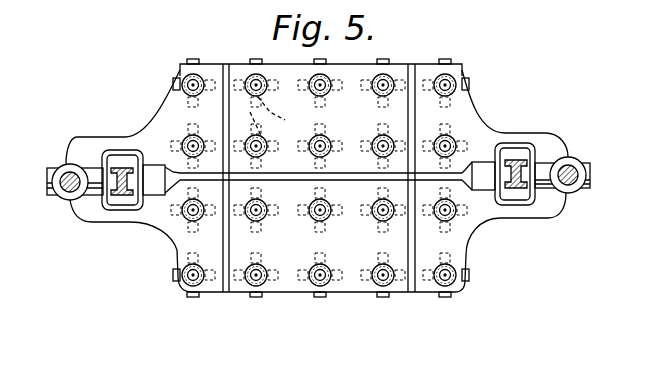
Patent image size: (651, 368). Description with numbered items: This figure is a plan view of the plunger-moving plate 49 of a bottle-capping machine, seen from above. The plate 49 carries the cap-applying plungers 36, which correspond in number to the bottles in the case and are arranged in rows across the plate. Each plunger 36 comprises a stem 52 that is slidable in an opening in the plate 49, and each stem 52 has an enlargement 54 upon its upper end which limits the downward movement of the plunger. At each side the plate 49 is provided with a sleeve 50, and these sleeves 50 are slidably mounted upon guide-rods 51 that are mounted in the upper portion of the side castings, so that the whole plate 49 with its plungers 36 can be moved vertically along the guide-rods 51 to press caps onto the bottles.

The cap-applying plunger 36 is at (383, 60).
The plunger-moving plate 49 is at (470, 125).
The sleeve 50 is at (68, 199).
The guide-rod 51 is at (64, 166).
The stem 52 is at (450, 73).
The enlargement 54 is at (185, 135).